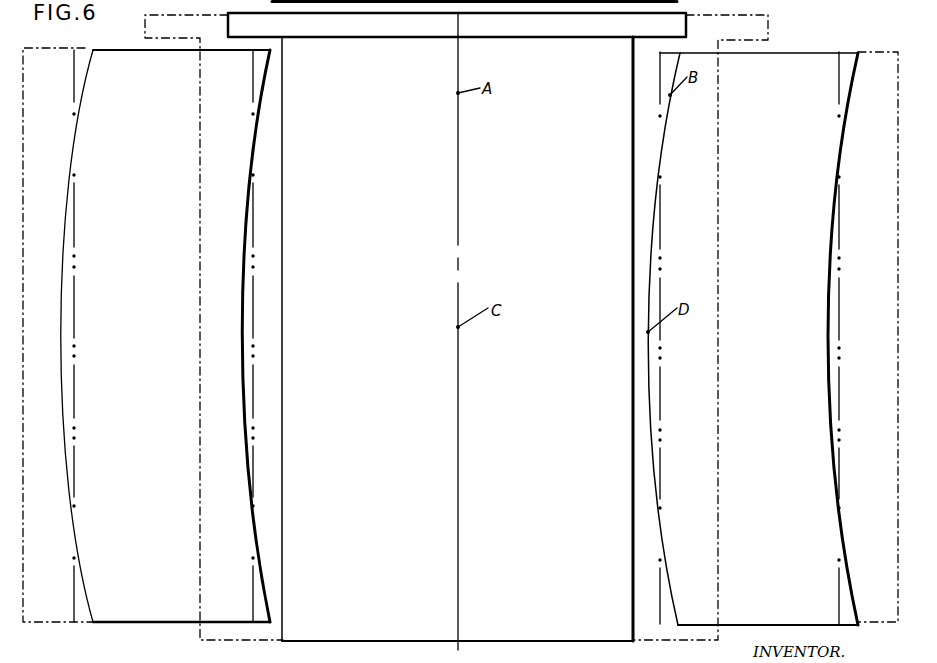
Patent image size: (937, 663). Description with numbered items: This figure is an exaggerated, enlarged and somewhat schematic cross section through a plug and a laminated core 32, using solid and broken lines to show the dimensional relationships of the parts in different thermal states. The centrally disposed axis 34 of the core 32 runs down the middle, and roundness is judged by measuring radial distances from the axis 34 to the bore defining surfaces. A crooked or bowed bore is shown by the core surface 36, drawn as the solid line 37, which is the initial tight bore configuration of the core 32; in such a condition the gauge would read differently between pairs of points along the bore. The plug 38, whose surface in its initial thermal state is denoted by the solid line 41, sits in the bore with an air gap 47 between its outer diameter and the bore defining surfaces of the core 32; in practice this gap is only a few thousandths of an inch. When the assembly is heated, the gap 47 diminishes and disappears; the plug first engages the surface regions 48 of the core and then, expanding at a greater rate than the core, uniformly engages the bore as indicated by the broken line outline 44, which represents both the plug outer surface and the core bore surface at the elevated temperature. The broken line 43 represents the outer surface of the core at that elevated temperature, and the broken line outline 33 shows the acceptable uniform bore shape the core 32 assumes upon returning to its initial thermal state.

The laminated core 32 is at (143, 608).
The broken line outline of core 33 is at (75, 262).
The central axis 34 is at (458, 172).
The core surface 36 is at (242, 250).
The solid line outline of core 37 is at (102, 622).
The plug 38 is at (580, 501).
The solid line outline of plug 41 is at (353, 640).
The broken line of core outer surface 43 is at (23, 115).
The broken line of plug and bore surface 44 is at (198, 130).
The air gap 47 is at (265, 197).
The surface regions 48 is at (265, 79).